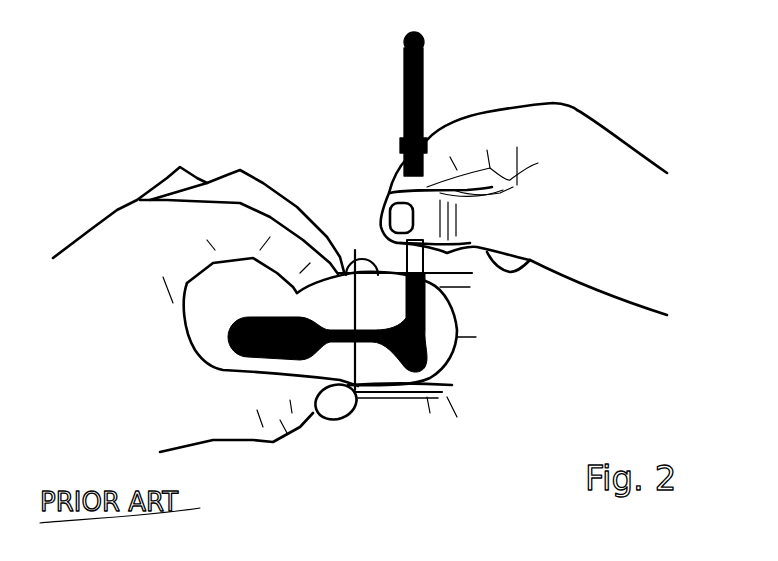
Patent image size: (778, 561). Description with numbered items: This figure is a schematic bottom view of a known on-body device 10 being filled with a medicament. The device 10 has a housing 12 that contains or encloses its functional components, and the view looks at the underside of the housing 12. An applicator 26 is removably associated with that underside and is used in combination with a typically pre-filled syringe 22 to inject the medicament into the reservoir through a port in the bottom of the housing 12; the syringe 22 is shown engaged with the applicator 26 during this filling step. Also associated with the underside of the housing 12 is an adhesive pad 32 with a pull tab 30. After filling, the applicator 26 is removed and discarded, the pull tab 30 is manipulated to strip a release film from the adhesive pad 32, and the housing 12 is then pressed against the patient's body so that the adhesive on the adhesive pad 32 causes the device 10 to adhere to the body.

The on-body device 10 is at (492, 343).
The housing 12 is at (378, 400).
The syringe 22 is at (430, 83).
The applicator 26 is at (427, 357).
The pull tab 30 is at (345, 244).
The adhesive pad 32 is at (395, 400).